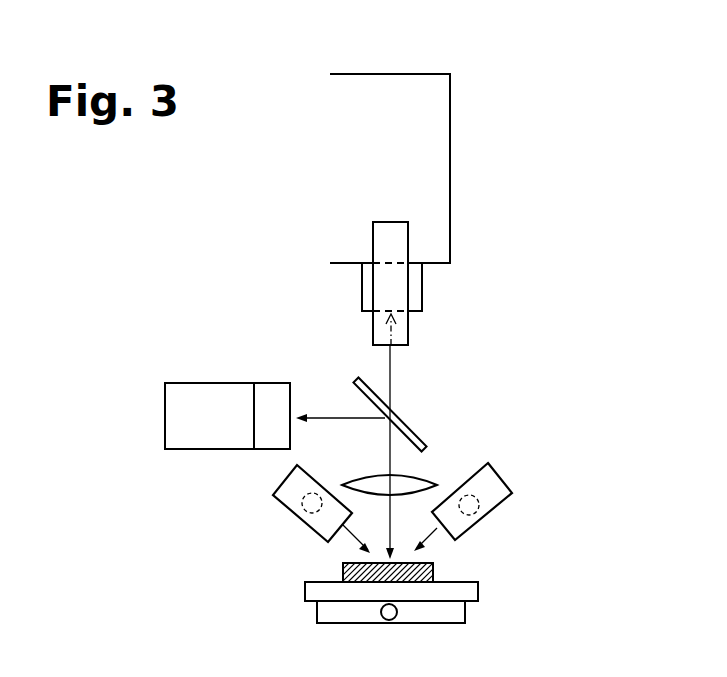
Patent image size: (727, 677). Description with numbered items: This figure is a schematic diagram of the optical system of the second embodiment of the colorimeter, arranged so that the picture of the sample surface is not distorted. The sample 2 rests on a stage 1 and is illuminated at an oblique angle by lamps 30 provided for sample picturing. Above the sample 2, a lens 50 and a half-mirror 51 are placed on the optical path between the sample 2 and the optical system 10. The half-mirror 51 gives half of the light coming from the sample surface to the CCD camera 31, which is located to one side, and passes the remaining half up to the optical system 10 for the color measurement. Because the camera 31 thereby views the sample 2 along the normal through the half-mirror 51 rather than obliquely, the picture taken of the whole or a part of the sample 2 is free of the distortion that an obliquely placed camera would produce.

The stage 1 is at (317, 609).
The sample 2 is at (436, 574).
The optical system 10 is at (384, 73).
The lamp 30 is at (287, 507).
The CCD camera 31 is at (211, 382).
The lens 50 is at (431, 478).
The half-mirror 51 is at (404, 423).